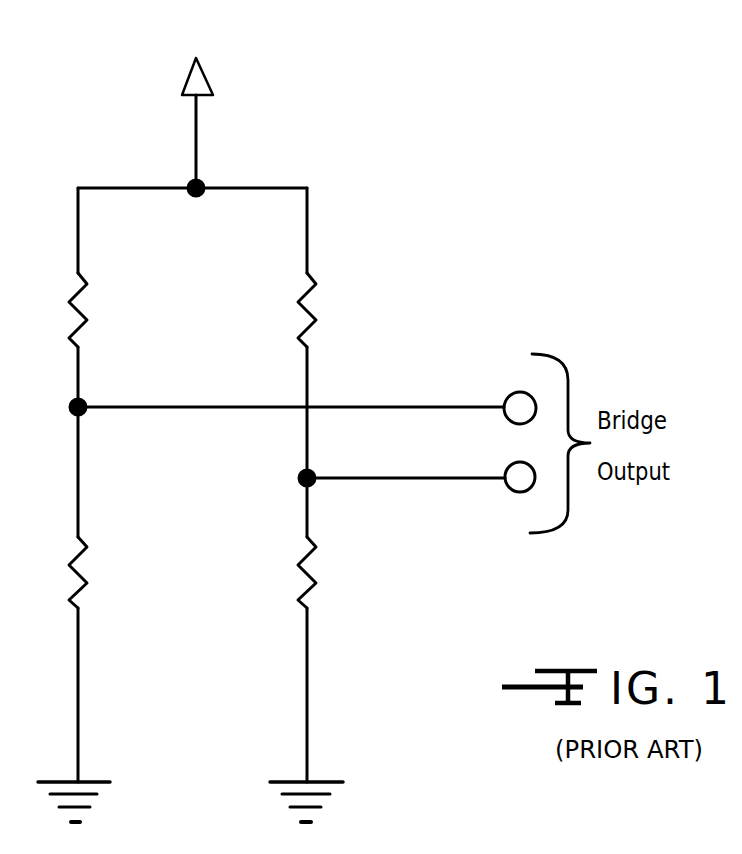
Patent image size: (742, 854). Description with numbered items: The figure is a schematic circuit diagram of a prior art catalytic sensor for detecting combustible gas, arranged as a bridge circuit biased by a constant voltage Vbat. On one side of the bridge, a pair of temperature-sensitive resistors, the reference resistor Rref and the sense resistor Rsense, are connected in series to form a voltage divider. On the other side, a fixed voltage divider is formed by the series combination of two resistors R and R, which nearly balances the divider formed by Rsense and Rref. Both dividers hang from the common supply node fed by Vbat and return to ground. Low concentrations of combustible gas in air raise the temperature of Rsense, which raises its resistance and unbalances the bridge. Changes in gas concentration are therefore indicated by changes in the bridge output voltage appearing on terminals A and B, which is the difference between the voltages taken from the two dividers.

The constant voltage Vbat is at (176, 110).
The reference resistor Rref is at (88, 333).
The fixed divider resistor R is at (316, 338).
The sense resistor Rsense is at (88, 583).
The bridge output terminal A is at (510, 396).
The bridge output terminal B is at (512, 492).